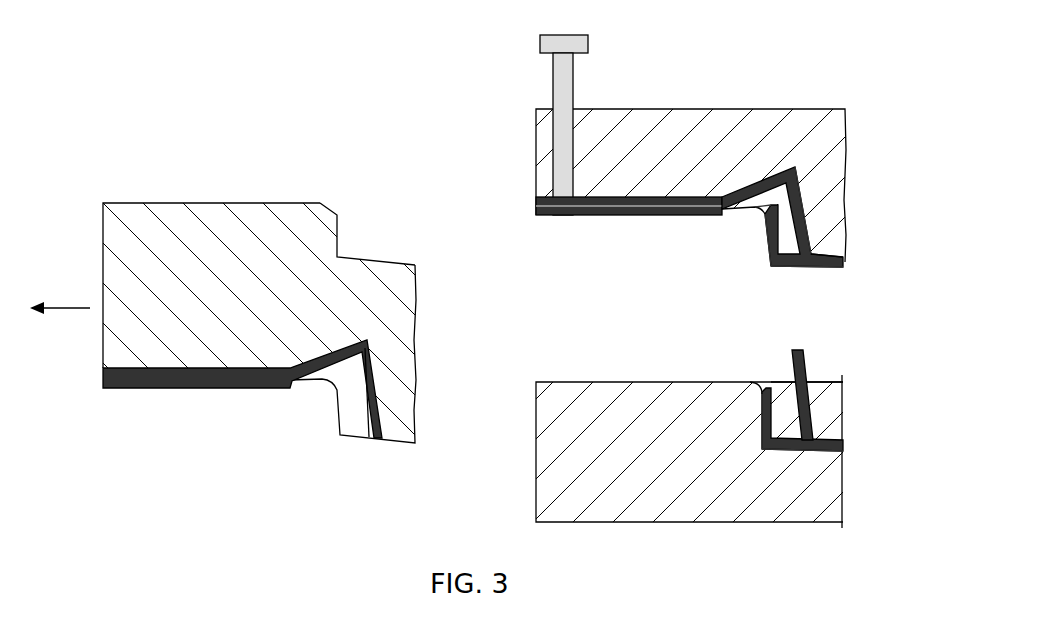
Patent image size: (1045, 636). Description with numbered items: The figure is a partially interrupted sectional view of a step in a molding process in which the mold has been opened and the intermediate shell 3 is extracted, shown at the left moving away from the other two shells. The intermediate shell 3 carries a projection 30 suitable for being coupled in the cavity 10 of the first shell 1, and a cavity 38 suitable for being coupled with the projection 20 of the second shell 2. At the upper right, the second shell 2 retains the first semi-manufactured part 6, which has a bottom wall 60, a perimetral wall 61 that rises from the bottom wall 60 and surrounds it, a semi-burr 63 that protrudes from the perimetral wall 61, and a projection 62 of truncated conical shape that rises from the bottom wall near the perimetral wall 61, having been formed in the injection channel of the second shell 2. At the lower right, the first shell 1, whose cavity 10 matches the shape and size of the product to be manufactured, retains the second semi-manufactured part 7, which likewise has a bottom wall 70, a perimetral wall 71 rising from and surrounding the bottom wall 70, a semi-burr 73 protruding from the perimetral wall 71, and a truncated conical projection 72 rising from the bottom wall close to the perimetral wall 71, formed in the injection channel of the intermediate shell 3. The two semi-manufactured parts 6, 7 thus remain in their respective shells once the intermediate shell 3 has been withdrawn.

The first shell 1 is at (638, 497).
The second shell 2 is at (720, 123).
The intermediate shell 3 is at (165, 248).
The first semi-manufactured part 6 is at (845, 265).
The second semi-manufactured part 7 is at (848, 440).
The cavity 10 is at (843, 387).
The projection 20 is at (830, 247).
The projection 30 is at (397, 415).
The cavity 38 is at (377, 220).
The bottom wall 60 is at (792, 266).
The perimetral wall 61 is at (763, 240).
The projection 62 is at (820, 205).
The semi-burr 63 is at (763, 212).
The bottom wall 70 is at (830, 458).
The perimetral wall 71 is at (762, 428).
The projection 72 is at (808, 425).
The semi-burr 73 is at (765, 385).